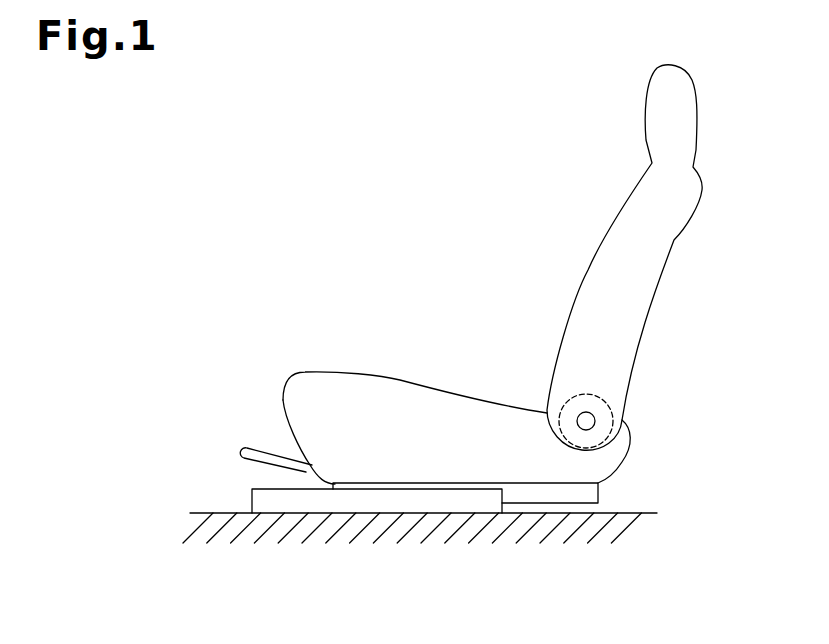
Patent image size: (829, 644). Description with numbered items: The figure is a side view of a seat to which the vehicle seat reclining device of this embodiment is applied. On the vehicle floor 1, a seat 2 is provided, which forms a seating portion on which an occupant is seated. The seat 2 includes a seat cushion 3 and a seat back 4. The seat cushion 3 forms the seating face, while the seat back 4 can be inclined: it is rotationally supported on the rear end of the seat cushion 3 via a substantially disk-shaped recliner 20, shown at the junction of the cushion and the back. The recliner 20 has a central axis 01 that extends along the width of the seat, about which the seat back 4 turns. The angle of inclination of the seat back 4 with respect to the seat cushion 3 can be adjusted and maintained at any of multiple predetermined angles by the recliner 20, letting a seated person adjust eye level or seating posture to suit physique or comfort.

The vehicle floor 1 is at (203, 513).
The seat 2 is at (471, 289).
The seat cushion 3 is at (431, 392).
The seat back 4 is at (640, 306).
The central axis 01 is at (583, 420).
The recliner 20 is at (621, 399).